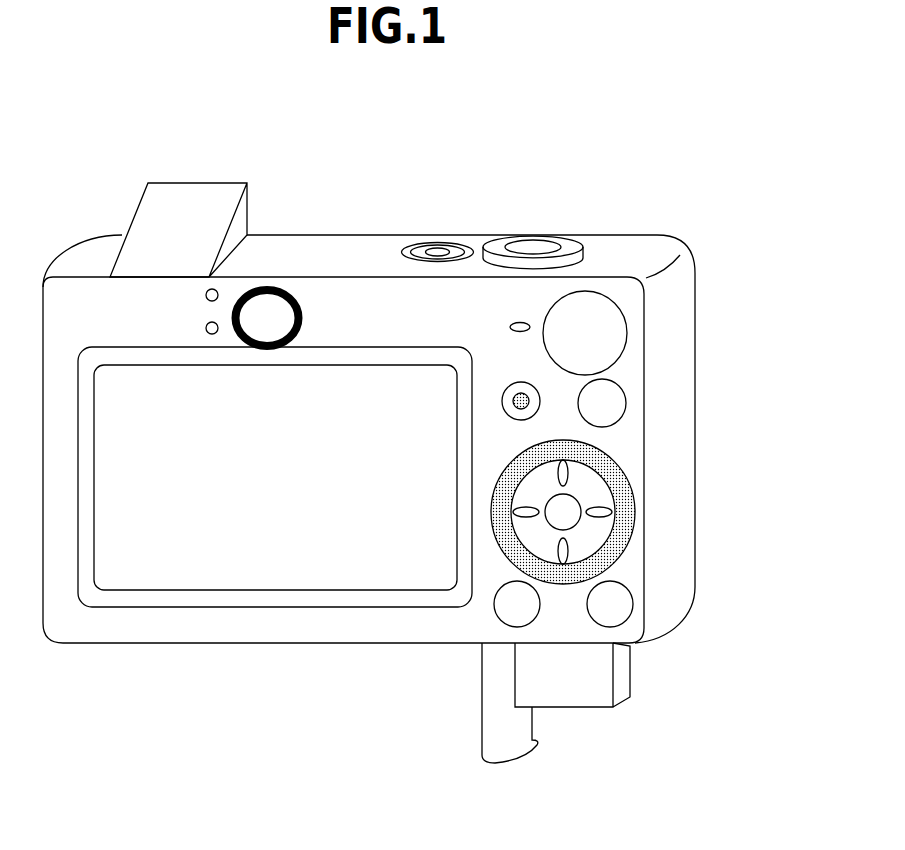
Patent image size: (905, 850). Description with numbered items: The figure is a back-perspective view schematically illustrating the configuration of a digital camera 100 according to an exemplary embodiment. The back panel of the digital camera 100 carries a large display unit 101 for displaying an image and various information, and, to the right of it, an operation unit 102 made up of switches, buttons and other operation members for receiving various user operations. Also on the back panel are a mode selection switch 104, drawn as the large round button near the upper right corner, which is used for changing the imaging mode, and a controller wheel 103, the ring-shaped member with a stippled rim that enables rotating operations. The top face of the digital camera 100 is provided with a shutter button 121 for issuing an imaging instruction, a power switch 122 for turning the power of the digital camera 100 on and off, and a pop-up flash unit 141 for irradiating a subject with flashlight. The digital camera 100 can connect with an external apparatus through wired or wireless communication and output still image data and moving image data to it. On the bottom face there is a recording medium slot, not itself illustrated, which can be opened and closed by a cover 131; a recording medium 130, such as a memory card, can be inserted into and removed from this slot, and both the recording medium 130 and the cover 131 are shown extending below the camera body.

The digital camera 100 is at (160, 702).
The display unit 101 is at (263, 563).
The operation unit 102 is at (572, 253).
The controller wheel 103 is at (515, 552).
The mode selection switch 104 is at (605, 318).
The shutter button 121 is at (535, 243).
The power switch 122 is at (440, 243).
The recording medium 130 is at (568, 690).
The cover 131 is at (508, 748).
The flash unit 141 is at (192, 203).